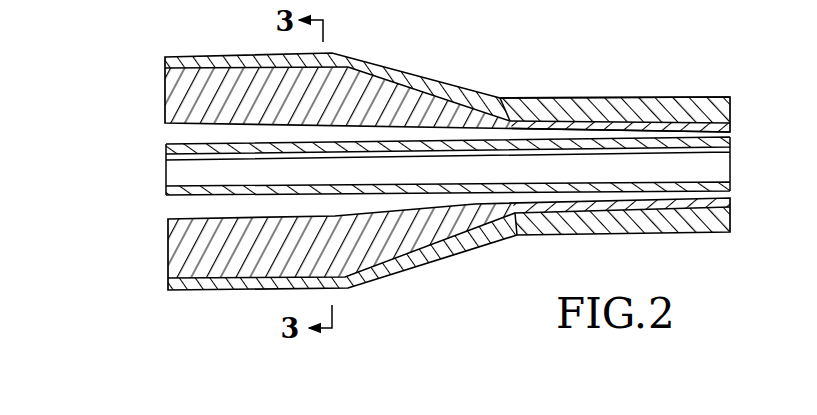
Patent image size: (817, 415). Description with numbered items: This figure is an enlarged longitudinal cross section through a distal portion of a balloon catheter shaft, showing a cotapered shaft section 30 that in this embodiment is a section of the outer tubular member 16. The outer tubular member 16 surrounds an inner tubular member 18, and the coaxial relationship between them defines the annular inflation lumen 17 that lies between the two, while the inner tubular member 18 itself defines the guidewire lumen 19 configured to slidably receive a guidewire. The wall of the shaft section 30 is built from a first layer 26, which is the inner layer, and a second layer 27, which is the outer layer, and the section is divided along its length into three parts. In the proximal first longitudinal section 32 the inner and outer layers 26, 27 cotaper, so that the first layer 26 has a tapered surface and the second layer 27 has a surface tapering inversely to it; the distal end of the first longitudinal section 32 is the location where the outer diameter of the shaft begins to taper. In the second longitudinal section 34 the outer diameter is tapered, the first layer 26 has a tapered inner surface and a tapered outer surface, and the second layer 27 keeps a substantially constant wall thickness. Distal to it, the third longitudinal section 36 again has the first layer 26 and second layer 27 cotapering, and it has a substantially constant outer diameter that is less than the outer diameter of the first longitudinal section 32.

The outer tubular member 16 is at (231, 286).
The inflation lumen 17 is at (165, 137).
The inner tubular member 18 is at (182, 192).
The guidewire lumen 19 is at (173, 172).
The first layer 26 is at (725, 128).
The second layer 27 is at (722, 106).
The shaft section 30 is at (518, 50).
The first longitudinal section 32 is at (332, 53).
The second longitudinal section 34 is at (422, 76).
The third longitudinal section 36 is at (567, 97).